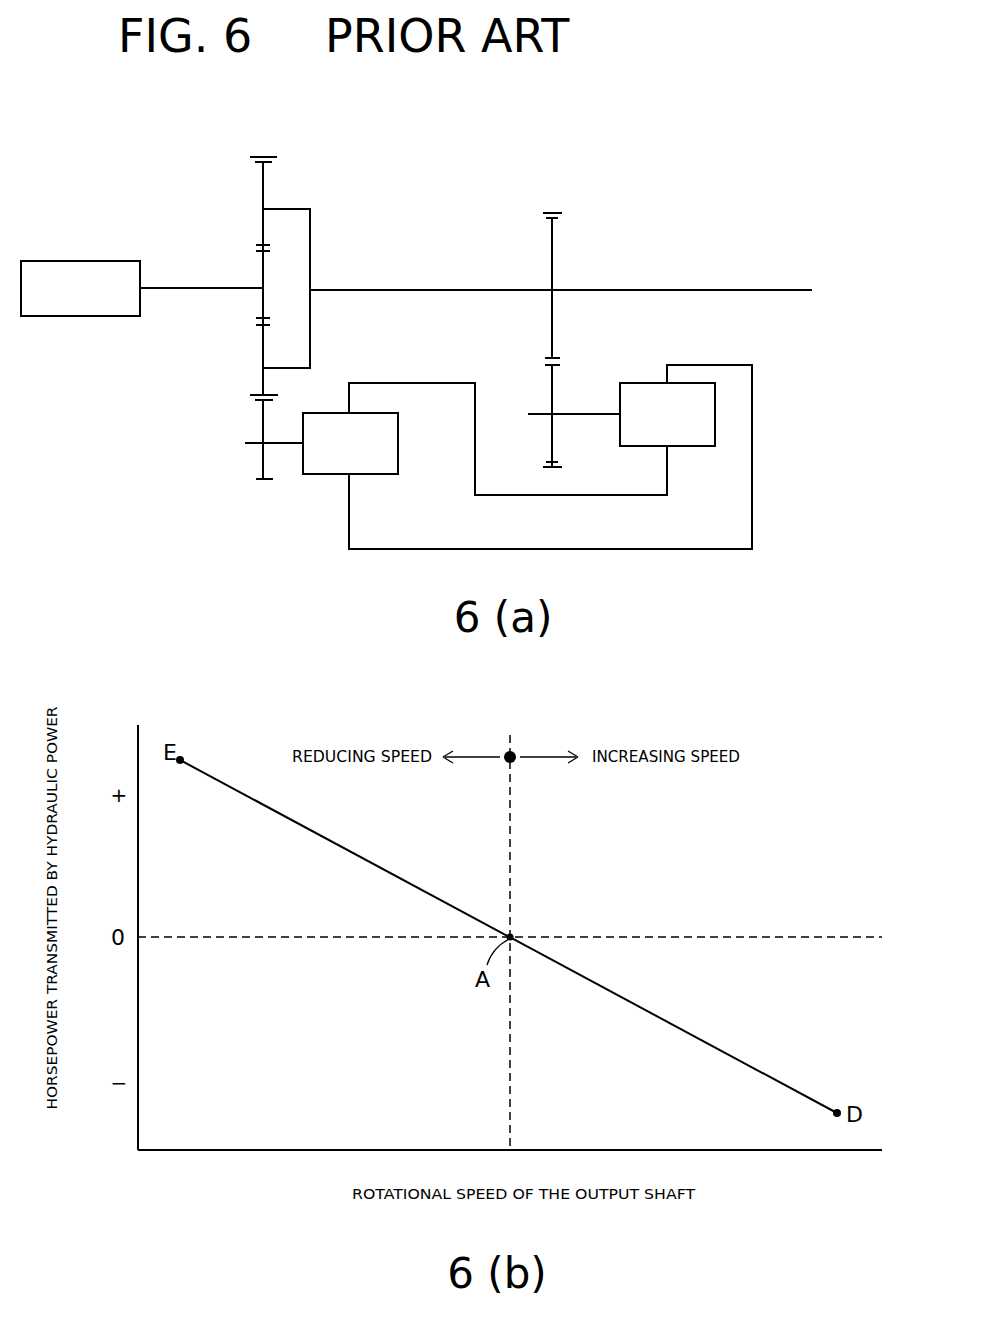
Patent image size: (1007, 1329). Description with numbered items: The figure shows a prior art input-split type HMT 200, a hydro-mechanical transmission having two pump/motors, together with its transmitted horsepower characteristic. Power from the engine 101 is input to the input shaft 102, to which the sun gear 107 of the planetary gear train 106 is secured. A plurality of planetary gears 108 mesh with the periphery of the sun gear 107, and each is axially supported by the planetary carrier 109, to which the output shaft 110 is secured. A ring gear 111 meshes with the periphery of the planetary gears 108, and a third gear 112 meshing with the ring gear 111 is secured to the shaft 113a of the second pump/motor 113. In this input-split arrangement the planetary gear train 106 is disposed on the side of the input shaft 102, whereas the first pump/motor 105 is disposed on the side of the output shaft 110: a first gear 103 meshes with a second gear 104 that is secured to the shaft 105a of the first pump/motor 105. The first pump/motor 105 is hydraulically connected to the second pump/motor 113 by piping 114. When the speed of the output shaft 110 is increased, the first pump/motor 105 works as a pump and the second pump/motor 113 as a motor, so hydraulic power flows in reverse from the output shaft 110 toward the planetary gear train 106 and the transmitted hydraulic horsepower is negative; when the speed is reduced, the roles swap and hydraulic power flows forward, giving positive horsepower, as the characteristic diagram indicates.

The engine 101 is at (45, 316).
The input shaft 102 is at (160, 286).
The first gear 103 is at (553, 243).
The second gear 104 is at (550, 390).
The first pump/motor 105 is at (697, 447).
The shaft of the first pump/motor 105a is at (586, 412).
The planetary gear train 106 is at (318, 271).
The sun gear 107 is at (262, 278).
The planetary gears 108 is at (263, 187).
The planetary carrier 109 is at (311, 340).
The output shaft 110 is at (777, 288).
The ring gear 111 is at (253, 157).
The third gear 112 is at (262, 460).
The second pump/motor 113 is at (380, 475).
The shaft of the second pump/motor 113a is at (285, 430).
The piping 114 is at (375, 550).
The input-split type HMT 200 is at (556, 166).